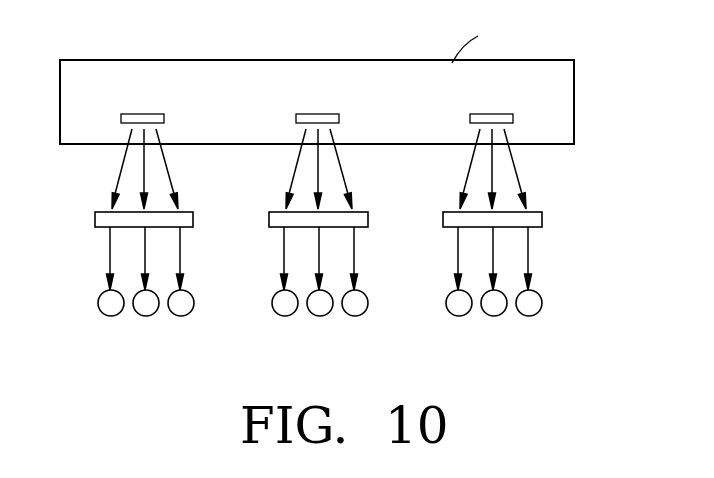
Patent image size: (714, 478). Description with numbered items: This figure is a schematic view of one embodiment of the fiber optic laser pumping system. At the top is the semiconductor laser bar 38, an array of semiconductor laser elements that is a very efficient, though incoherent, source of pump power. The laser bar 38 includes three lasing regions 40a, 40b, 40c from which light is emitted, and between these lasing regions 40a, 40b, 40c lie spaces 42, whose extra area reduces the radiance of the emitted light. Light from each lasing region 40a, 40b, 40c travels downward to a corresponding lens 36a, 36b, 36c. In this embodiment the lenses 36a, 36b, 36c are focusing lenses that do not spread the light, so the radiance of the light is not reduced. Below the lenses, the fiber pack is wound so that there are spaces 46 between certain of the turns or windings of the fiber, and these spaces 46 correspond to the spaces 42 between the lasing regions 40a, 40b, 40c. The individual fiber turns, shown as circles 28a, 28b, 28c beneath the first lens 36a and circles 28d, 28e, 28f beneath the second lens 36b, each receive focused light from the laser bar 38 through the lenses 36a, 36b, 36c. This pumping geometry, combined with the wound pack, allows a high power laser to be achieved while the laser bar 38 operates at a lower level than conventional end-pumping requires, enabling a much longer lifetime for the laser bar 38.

The semiconductor laser bar 38 is at (270, 65).
The lasing region 40a is at (125, 118).
The lasing region 40b is at (293, 118).
The lasing region 40c is at (468, 118).
The spaces between lasing regions 42 is at (234, 128).
The focusing lens 36a is at (107, 220).
The focusing lens 36b is at (280, 220).
The focusing lens 36c is at (455, 220).
The spaces between windings 46 is at (244, 256).
The optical fiber 28a is at (110, 307).
The optical fiber 28b is at (150, 308).
The optical fiber 28c is at (182, 307).
The optical fiber 28d is at (287, 307).
The optical fiber 28e is at (330, 308).
The optical fiber 28f is at (357, 307).